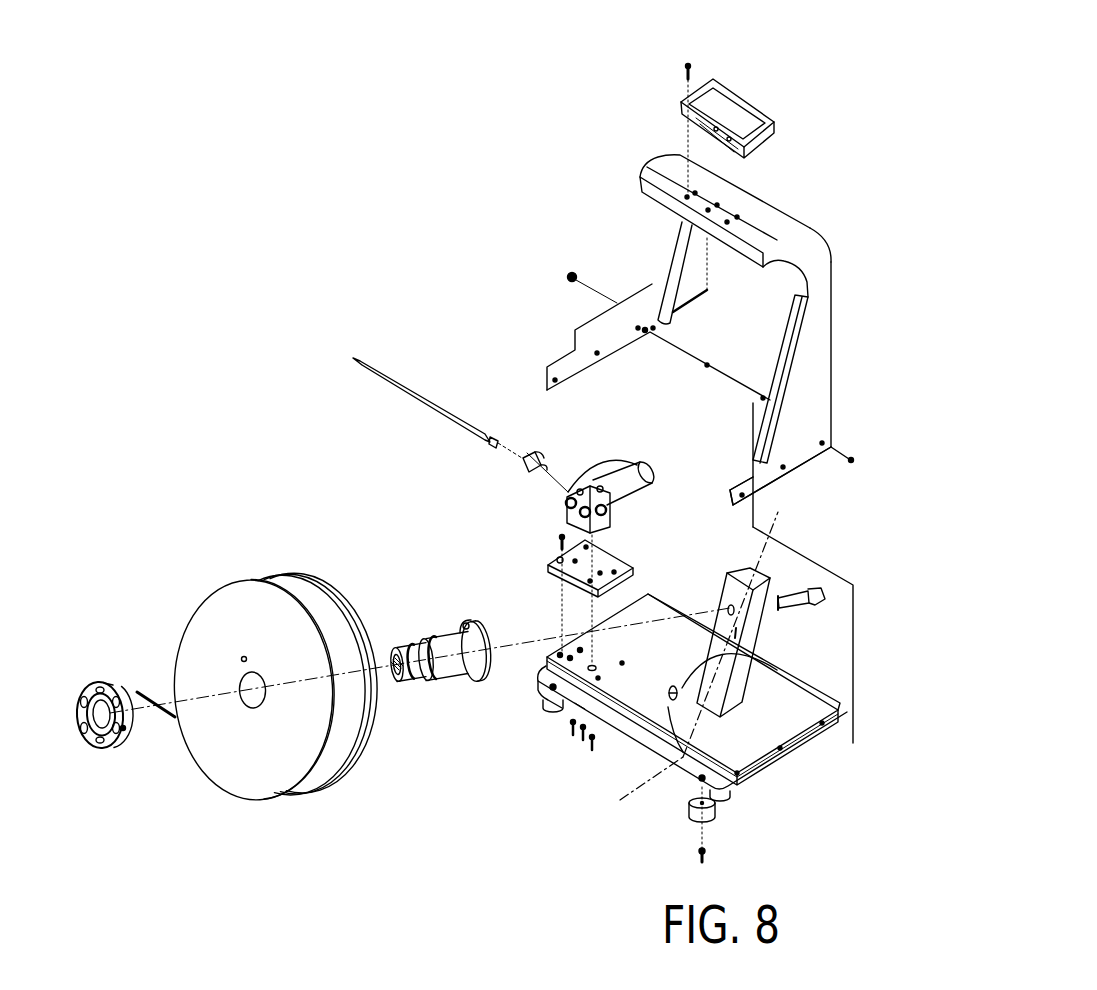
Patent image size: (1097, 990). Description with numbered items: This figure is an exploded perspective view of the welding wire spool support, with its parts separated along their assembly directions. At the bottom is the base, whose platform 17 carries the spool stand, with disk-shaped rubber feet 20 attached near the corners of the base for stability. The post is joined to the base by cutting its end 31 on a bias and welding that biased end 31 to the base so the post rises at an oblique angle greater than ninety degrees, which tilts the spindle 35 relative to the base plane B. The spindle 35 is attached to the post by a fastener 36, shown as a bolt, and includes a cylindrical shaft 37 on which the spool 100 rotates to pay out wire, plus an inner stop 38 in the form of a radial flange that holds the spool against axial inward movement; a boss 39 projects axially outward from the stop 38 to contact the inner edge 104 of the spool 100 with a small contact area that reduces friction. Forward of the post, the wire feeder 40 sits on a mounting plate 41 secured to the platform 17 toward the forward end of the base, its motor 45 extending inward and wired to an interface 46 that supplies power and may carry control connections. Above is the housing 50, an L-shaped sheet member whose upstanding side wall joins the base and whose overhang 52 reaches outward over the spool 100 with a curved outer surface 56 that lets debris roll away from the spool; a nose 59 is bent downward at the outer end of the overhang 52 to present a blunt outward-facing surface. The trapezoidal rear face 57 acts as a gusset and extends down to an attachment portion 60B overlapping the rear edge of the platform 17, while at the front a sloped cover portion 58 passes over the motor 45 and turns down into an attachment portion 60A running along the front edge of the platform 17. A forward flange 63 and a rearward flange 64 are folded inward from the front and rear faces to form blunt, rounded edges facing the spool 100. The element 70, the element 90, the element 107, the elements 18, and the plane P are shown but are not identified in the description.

The tray 70 is at (746, 86).
The nose 59 is at (637, 192).
The overhang 52 is at (788, 243).
The curved outer surface 56 is at (825, 240).
The cover portion 58 is at (832, 285).
The housing 50 is at (695, 337).
The interface 46 is at (570, 274).
The forward flange 63 is at (681, 267).
The attachment portion 60A is at (563, 362).
The rearward flange 64 is at (797, 320).
The rear face 57 is at (815, 415).
The attachment portion 60B is at (798, 454).
The plane P is at (780, 540).
The wire feeder 40 is at (512, 445).
The wire feeder motor 45 is at (635, 472).
The mounting plate 41 is at (610, 548).
The fastener 36 is at (808, 585).
The biased end of the post 31 is at (787, 670).
The feet 18 is at (840, 712).
The platform 17 is at (730, 697).
The feet 20 is at (688, 813).
The base plane B is at (630, 783).
The boss 39 is at (469, 621).
The inner stop 38 is at (484, 640).
The spindle 35 is at (448, 643).
The cylindrical shaft 37 is at (449, 664).
The spool 100 is at (420, 677).
The inner edge of spool 104 is at (305, 572).
The retaining flange 90 is at (94, 678).
The hub opening 107 is at (253, 705).